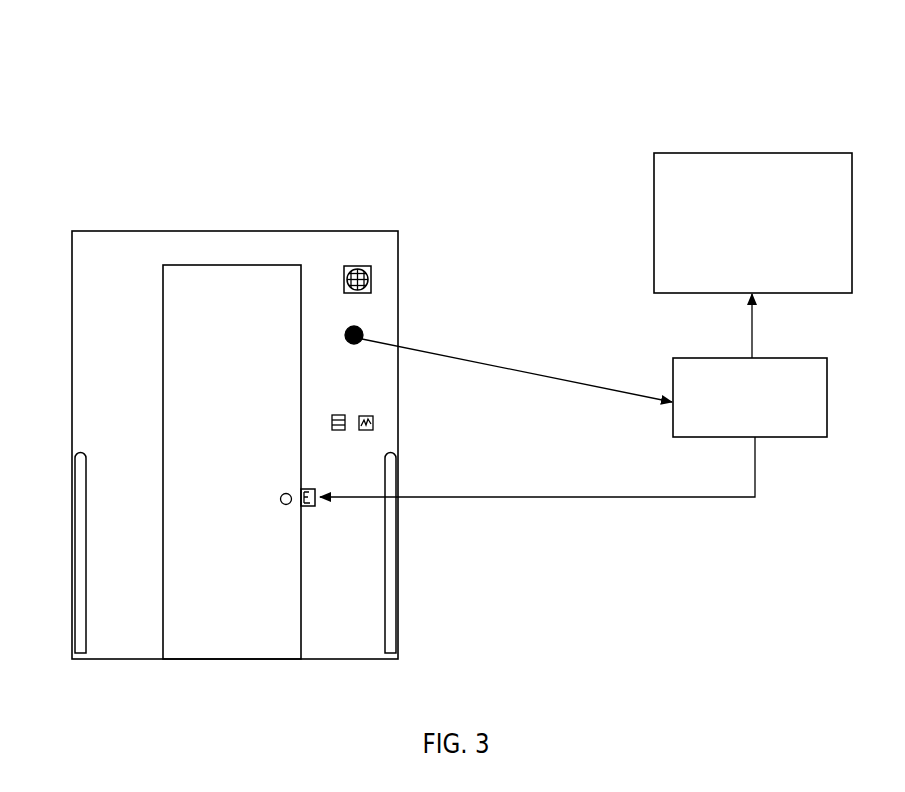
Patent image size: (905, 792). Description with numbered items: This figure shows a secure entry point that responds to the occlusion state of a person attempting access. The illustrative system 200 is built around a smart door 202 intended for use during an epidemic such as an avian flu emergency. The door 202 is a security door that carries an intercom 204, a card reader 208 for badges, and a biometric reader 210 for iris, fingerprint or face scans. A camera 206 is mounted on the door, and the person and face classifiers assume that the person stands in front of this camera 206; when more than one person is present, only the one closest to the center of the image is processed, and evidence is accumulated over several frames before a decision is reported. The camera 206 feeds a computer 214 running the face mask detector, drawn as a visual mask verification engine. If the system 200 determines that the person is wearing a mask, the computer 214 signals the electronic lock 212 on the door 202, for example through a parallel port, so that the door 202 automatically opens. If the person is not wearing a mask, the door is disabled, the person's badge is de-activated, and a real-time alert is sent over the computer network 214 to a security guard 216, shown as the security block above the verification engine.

The system 200 is at (399, 58).
The smart door 202 is at (213, 368).
The intercom 204 is at (374, 278).
The camera 206 is at (367, 331).
The card reader 208 is at (338, 411).
The biometric reader 210 is at (388, 434).
The electronic lock 212 is at (269, 595).
The computer 214 is at (767, 438).
The security guard 216 is at (735, 267).